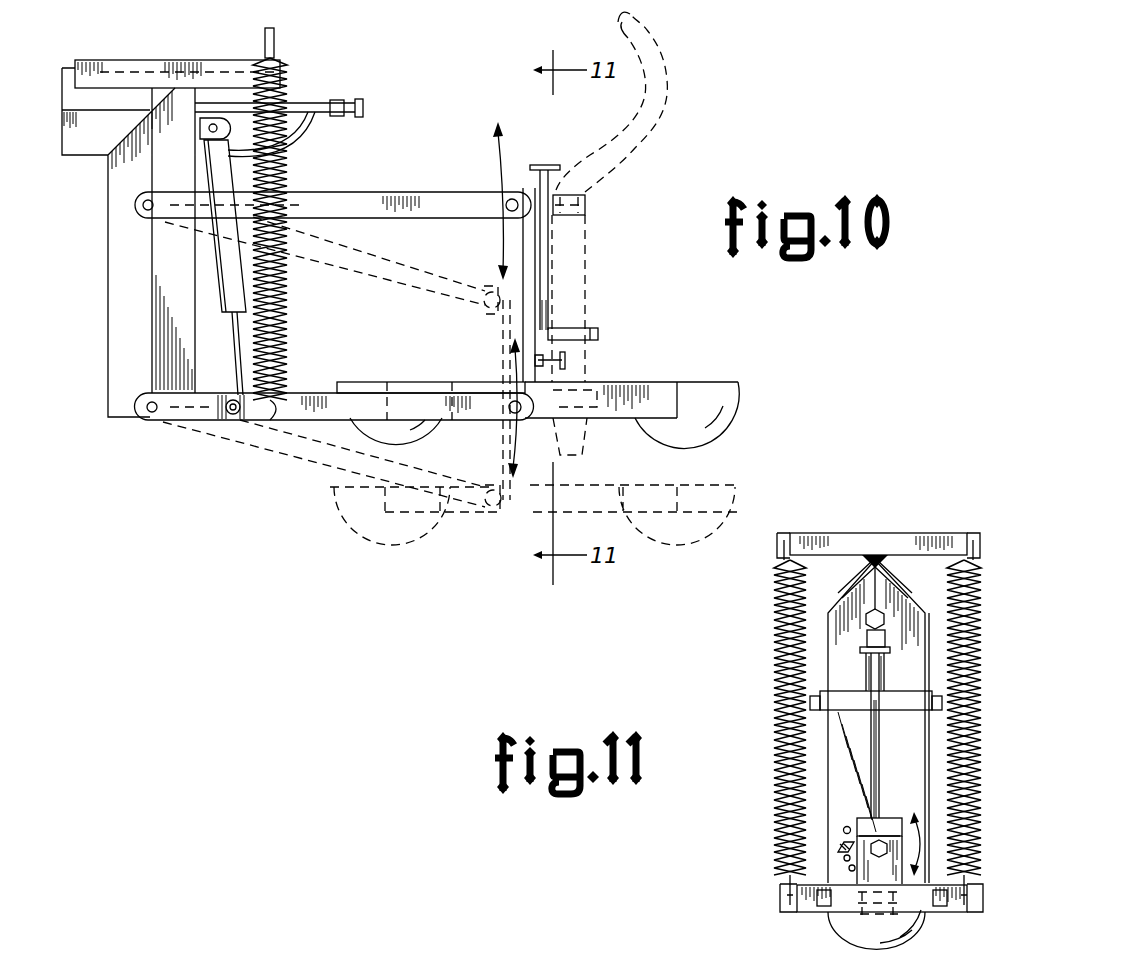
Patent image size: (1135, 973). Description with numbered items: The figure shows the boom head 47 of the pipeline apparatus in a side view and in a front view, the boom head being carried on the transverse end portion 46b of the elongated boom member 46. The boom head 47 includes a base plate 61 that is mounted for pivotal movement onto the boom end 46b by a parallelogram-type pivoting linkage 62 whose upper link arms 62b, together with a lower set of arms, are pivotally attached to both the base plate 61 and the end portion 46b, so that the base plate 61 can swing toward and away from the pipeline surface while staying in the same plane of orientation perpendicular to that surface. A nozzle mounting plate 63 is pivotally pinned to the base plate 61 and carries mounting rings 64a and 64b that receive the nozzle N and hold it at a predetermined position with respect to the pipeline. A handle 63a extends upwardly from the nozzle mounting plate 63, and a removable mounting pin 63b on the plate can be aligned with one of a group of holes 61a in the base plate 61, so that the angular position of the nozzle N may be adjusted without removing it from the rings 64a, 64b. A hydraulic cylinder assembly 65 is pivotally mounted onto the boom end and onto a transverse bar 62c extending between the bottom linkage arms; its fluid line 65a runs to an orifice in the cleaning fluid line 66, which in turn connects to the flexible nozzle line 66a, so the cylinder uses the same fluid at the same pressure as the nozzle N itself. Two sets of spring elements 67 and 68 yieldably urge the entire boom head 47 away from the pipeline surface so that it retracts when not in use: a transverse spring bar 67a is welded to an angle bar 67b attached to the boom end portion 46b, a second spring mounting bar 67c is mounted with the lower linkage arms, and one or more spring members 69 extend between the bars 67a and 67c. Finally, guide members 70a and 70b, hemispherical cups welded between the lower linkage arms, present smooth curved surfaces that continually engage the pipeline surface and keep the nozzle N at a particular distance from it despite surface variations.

In FIG. 11, the boom member 46 is at (905, 608).
In FIG. 10, the transverse end portion 46b is at (110, 275).
In FIG. 11, the transverse end portion 46b is at (835, 662).
In FIG. 10, the boom head 47 is at (418, 112).
In FIG. 11, the boom head 47 is at (735, 722).
In FIG. 10, the base plate 61 is at (532, 272).
In FIG. 11, the base plate 61 is at (837, 750).
In FIG. 11, the holes 61a is at (843, 830).
In FIG. 10, the pivoting linkage 62 is at (158, 425).
In FIG. 10, the link arms 62b is at (370, 192).
In FIG. 10, the transverse bar 62c is at (225, 420).
In FIG. 10, the nozzle mounting plate 63 is at (550, 323).
In FIG. 11, the nozzle mounting plate 63 is at (890, 840).
In FIG. 10, the handle 63a is at (575, 195).
In FIG. 11, the removable mounting pin 63b is at (838, 848).
In FIG. 10, the mounting ring 64a is at (598, 336).
In FIG. 10, the mounting ring 64b is at (597, 390).
In FIG. 10, the hydraulic cylinder assembly 65 is at (290, 285).
In FIG. 10, the fluid line 65a is at (312, 140).
In FIG. 10, the cleaning fluid line 66 is at (340, 100).
In FIG. 10, the flexible nozzle line 66a is at (666, 80).
In FIG. 10, the spring elements 67 is at (270, 229).
In FIG. 11, the spring elements 67 is at (782, 572).
In FIG. 10, the transverse spring bar 67a is at (276, 38).
In FIG. 11, the transverse spring bar 67a is at (888, 533).
In FIG. 10, the angle bar 67b is at (135, 60).
In FIG. 10, the second spring mounting bar 67c is at (272, 425).
In FIG. 11, the second spring mounting bar 67c is at (780, 900).
In FIG. 11, the spring elements 68 is at (958, 572).
In FIG. 11, the spring members 69 is at (772, 595).
In FIG. 10, the guide member 70a is at (738, 400).
In FIG. 10, the guide member 70b is at (375, 382).
In FIG. 10, the nozzle N is at (585, 272).